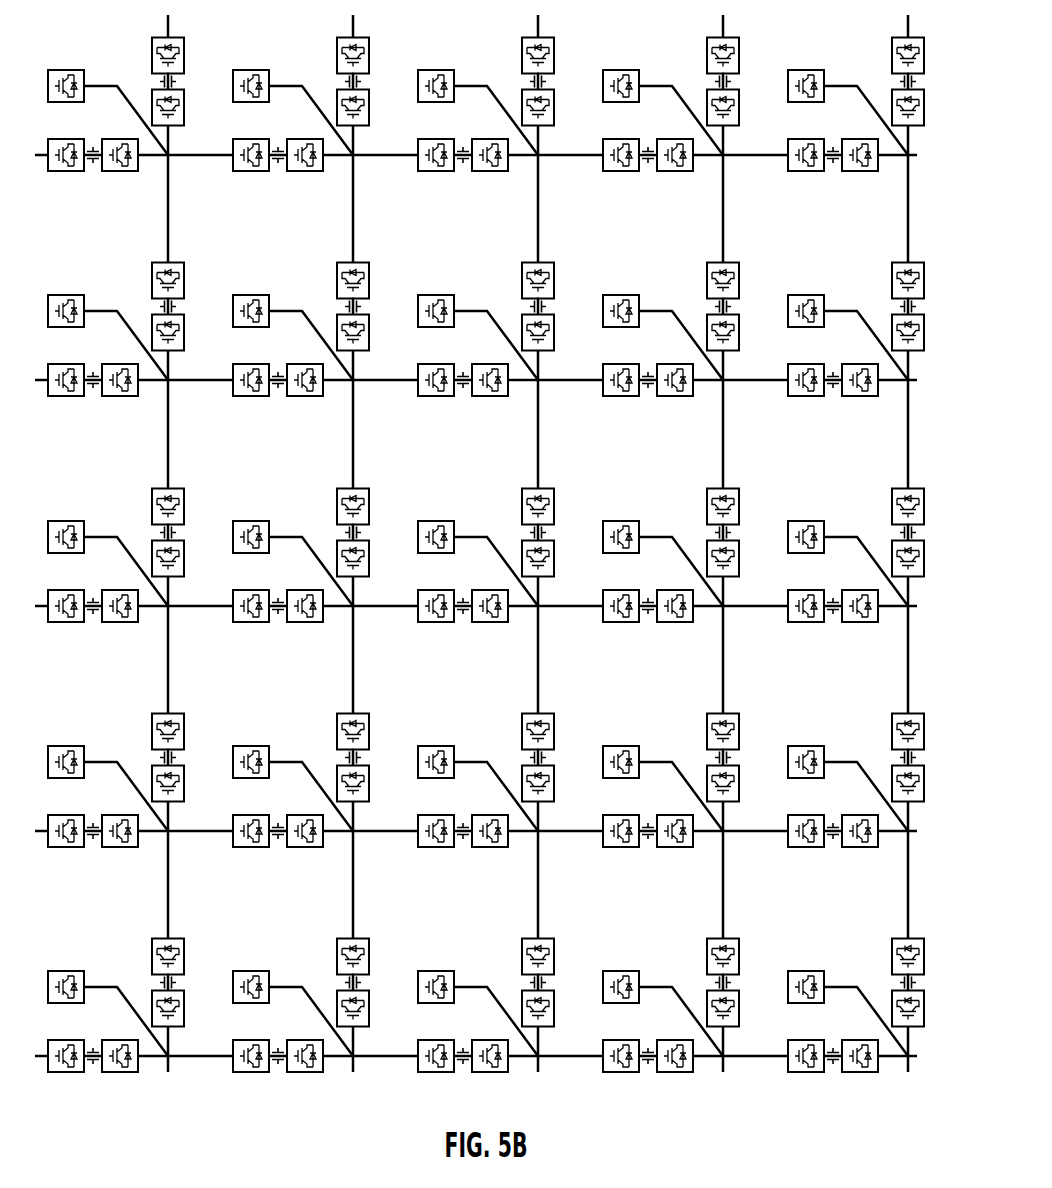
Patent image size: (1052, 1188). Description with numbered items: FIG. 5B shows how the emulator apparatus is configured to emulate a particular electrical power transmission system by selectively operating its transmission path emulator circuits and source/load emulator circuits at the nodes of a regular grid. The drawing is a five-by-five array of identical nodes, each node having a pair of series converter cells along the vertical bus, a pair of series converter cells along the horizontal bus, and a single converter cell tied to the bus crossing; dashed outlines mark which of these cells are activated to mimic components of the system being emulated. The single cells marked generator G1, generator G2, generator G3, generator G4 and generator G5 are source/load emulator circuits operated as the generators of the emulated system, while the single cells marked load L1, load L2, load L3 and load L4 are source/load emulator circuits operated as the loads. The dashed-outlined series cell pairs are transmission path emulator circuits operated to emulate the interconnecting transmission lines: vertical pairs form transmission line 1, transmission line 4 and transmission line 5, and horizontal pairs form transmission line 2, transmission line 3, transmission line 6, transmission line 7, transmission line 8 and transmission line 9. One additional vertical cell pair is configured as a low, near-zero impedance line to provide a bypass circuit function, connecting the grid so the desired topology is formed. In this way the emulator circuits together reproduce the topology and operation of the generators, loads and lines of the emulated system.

The generator G1 is at (251, 70).
The generator G2 is at (621, 521).
The generator G3 is at (621, 70).
The generator G4 is at (436, 521).
The generator G5 is at (806, 744).
The load L1 is at (251, 294).
The load L2 is at (436, 294).
The load L3 is at (806, 521).
The load L4 is at (436, 746).
The transmission line 1 is at (368, 307).
The transmission line 2 is at (463, 398).
The transmission line 3 is at (648, 398).
The transmission line 4 is at (739, 307).
The transmission line 5 is at (739, 533).
The transmission line 6 is at (648, 624).
The transmission line 7 is at (833, 624).
The transmission line 8 is at (648, 849).
The transmission line 9 is at (833, 848).